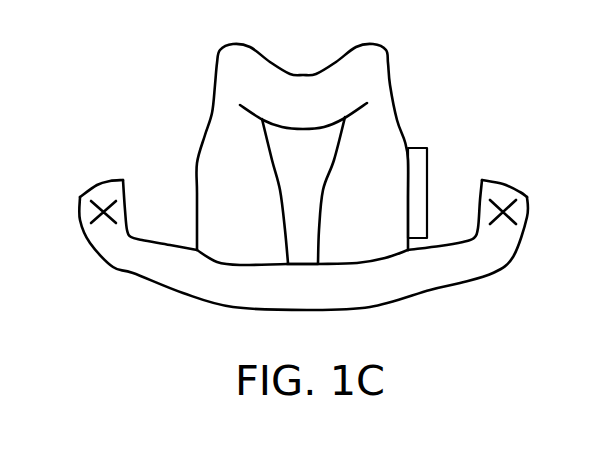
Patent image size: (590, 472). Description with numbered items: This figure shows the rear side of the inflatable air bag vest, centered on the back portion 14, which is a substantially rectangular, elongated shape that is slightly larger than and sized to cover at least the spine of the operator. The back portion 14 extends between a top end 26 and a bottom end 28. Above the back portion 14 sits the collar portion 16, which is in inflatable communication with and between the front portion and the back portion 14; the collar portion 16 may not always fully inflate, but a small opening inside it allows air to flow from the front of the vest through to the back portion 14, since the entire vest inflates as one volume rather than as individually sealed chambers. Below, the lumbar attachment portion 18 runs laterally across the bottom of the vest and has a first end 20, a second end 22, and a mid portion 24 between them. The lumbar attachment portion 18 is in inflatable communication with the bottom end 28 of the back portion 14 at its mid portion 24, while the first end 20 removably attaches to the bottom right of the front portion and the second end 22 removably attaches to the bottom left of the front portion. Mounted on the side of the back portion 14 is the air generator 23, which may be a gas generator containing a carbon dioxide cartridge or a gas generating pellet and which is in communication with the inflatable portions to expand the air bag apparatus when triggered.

The back portion 14 is at (288, 171).
The collar portion 16 is at (281, 115).
The lumbar attachment portion 18 is at (348, 295).
The first end 20 is at (120, 186).
The second end 22 is at (508, 182).
The air generator 23 is at (417, 149).
The mid portion 24 is at (308, 293).
The top end 26 is at (235, 105).
The bottom end 28 is at (283, 272).